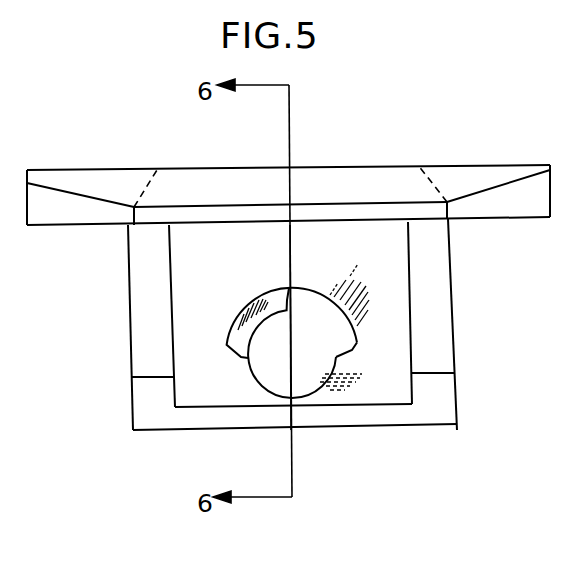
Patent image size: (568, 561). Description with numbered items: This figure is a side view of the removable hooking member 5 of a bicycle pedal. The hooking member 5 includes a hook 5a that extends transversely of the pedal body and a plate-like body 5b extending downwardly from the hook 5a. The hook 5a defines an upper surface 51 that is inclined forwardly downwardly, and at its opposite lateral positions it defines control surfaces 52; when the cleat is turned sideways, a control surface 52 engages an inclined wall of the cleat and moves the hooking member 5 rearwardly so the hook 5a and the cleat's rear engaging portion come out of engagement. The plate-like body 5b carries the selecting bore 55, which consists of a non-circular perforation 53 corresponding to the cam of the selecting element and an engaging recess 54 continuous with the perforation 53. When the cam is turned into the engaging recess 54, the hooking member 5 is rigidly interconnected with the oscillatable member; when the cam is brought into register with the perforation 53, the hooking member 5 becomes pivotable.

The hooking member 5 is at (411, 161).
The hook 5a is at (350, 165).
The plate-like body 5b is at (388, 395).
The upper surface 51 is at (247, 177).
The control surfaces 52 is at (72, 200).
The non-circular perforation 53 is at (315, 398).
The engaging recess 54 is at (243, 343).
The selecting bore 55 is at (284, 492).